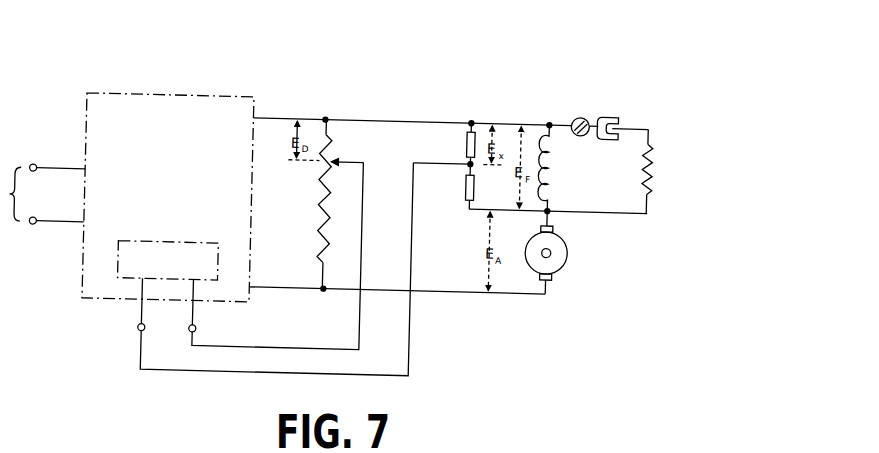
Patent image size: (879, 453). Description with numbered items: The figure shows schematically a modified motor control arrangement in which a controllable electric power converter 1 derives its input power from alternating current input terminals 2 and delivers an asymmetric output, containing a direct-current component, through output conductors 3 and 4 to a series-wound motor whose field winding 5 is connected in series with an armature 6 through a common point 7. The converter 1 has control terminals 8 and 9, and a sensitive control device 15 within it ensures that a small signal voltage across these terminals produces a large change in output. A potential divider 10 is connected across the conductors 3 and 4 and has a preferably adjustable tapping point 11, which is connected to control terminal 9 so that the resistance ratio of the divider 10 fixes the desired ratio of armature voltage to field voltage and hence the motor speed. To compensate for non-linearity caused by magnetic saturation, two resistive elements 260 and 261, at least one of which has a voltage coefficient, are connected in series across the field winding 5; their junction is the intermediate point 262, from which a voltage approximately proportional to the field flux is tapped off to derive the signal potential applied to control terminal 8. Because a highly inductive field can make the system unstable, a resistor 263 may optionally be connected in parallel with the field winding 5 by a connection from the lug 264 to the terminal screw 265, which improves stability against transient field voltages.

The controllable electric power converter 1 is at (137, 101).
The alternating current input terminals 2 is at (42, 194).
The output conductor 3 is at (307, 120).
The output conductor 4 is at (301, 294).
The field winding 5 is at (554, 167).
The armature 6 is at (568, 250).
The common point 7 is at (552, 205).
The control terminal 8 is at (140, 334).
The control terminal 9 is at (198, 334).
The potential divider 10 is at (322, 226).
The tapping point 11 is at (334, 175).
The sensitive control device 15 is at (173, 248).
The resistive element 260 is at (465, 141).
The resistive element 261 is at (465, 186).
The intermediate point 262 is at (467, 162).
The resistor 263 is at (652, 179).
The lug 264 is at (612, 112).
The terminal screw 265 is at (570, 116).